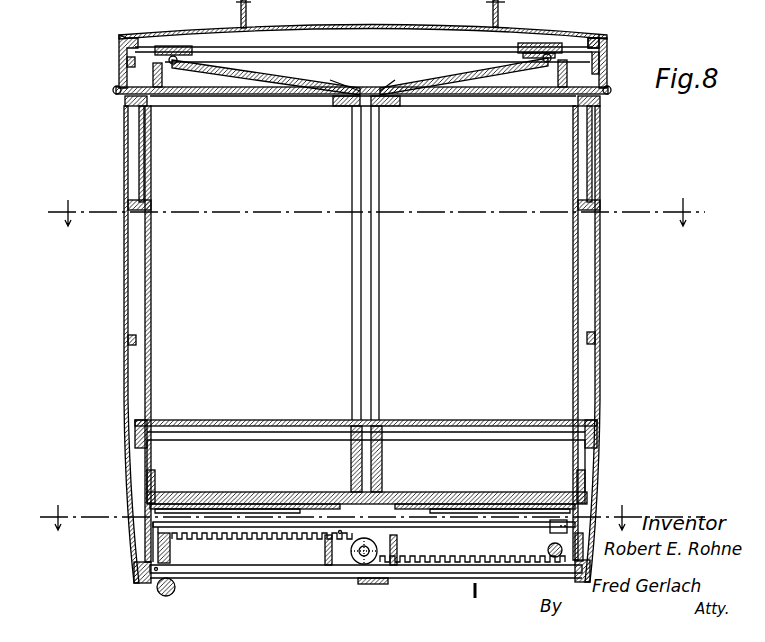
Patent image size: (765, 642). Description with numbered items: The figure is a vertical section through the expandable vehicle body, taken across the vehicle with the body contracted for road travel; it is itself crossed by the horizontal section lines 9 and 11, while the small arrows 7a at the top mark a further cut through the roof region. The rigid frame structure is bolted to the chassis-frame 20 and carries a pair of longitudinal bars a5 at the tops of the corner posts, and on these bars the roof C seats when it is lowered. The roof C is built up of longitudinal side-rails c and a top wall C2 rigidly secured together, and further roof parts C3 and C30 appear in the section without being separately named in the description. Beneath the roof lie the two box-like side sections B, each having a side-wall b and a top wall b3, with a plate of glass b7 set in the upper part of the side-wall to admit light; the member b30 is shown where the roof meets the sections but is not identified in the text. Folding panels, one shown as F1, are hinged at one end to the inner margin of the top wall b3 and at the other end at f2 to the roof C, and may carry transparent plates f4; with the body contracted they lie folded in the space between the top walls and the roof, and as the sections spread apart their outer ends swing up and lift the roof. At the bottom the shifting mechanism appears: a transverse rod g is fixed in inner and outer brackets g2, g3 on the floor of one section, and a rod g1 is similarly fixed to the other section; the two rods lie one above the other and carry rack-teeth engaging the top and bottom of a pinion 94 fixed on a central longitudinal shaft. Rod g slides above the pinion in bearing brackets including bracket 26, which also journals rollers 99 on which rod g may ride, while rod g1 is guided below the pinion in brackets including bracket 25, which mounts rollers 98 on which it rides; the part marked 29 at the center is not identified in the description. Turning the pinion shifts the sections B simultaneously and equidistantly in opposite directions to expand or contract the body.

The section line 7a— 7a is at (175, 16).
The chassis-frame 20 is at (498, 12).
The top wall C2 is at (412, 19).
The roof C is at (119, 63).
The longitudinal side-rail c is at (606, 55).
The cover plate C3 is at (438, 49).
The cover plate block C30 is at (556, 48).
The transparent plate f4 is at (280, 77).
The hinge f2 is at (175, 64).
The lever F1 is at (330, 86).
The longitudinal bar a5 is at (116, 86).
The frame block b30 is at (125, 103).
The top wall b3 is at (212, 98).
The side-wall b is at (123, 287).
The side section B is at (355, 373).
The plate of glass b7 is at (138, 165).
The section line 9— 9 is at (376, 212).
The section line 11— 11 is at (369, 516).
The transverse rod g is at (475, 525).
The outer bracket g3 is at (150, 522).
The inner bracket g2 is at (313, 508).
The bracket 26 is at (582, 516).
The transverse rod g1 is at (458, 573).
The bracket 25 is at (172, 549).
The pinion 94 is at (360, 565).
The roller 99 is at (548, 550).
The roller 98 is at (158, 594).
The bearing block 29 is at (385, 586).